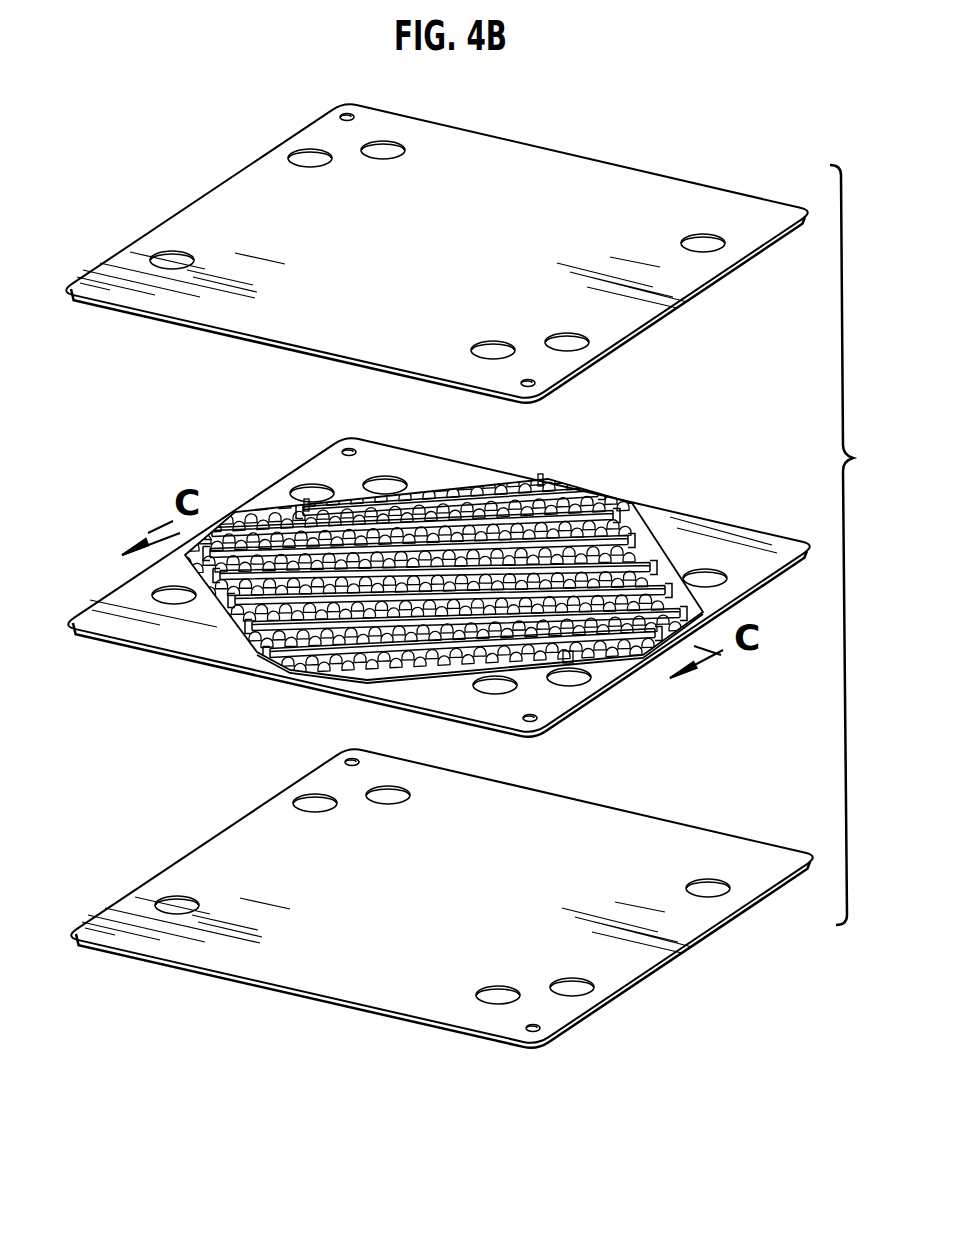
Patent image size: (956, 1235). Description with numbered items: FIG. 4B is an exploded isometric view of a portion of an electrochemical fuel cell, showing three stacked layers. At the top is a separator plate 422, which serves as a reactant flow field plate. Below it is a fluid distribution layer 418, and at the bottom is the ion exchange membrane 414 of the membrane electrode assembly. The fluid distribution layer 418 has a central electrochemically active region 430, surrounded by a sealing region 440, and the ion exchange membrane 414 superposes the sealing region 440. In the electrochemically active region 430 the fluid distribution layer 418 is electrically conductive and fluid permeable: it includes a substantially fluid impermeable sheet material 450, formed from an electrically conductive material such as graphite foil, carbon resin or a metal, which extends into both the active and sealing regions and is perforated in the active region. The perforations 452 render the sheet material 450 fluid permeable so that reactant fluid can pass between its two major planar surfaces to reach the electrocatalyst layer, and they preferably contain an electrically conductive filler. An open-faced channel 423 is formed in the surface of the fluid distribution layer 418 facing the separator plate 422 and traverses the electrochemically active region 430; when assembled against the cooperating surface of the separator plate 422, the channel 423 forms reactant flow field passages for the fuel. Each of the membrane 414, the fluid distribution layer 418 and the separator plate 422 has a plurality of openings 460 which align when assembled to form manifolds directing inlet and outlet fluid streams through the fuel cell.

The ion exchange membrane 414 is at (441, 898).
The fluid distribution layer 418 is at (773, 625).
The separator plate 422 is at (708, 292).
The open-faced channel 423 is at (539, 478).
The electrochemically active region 430 is at (635, 500).
The sealing region 440 is at (702, 518).
The substantially fluid impermeable sheet material 450 is at (407, 581).
The perforations 452 is at (300, 653).
The openings 460 is at (177, 903).